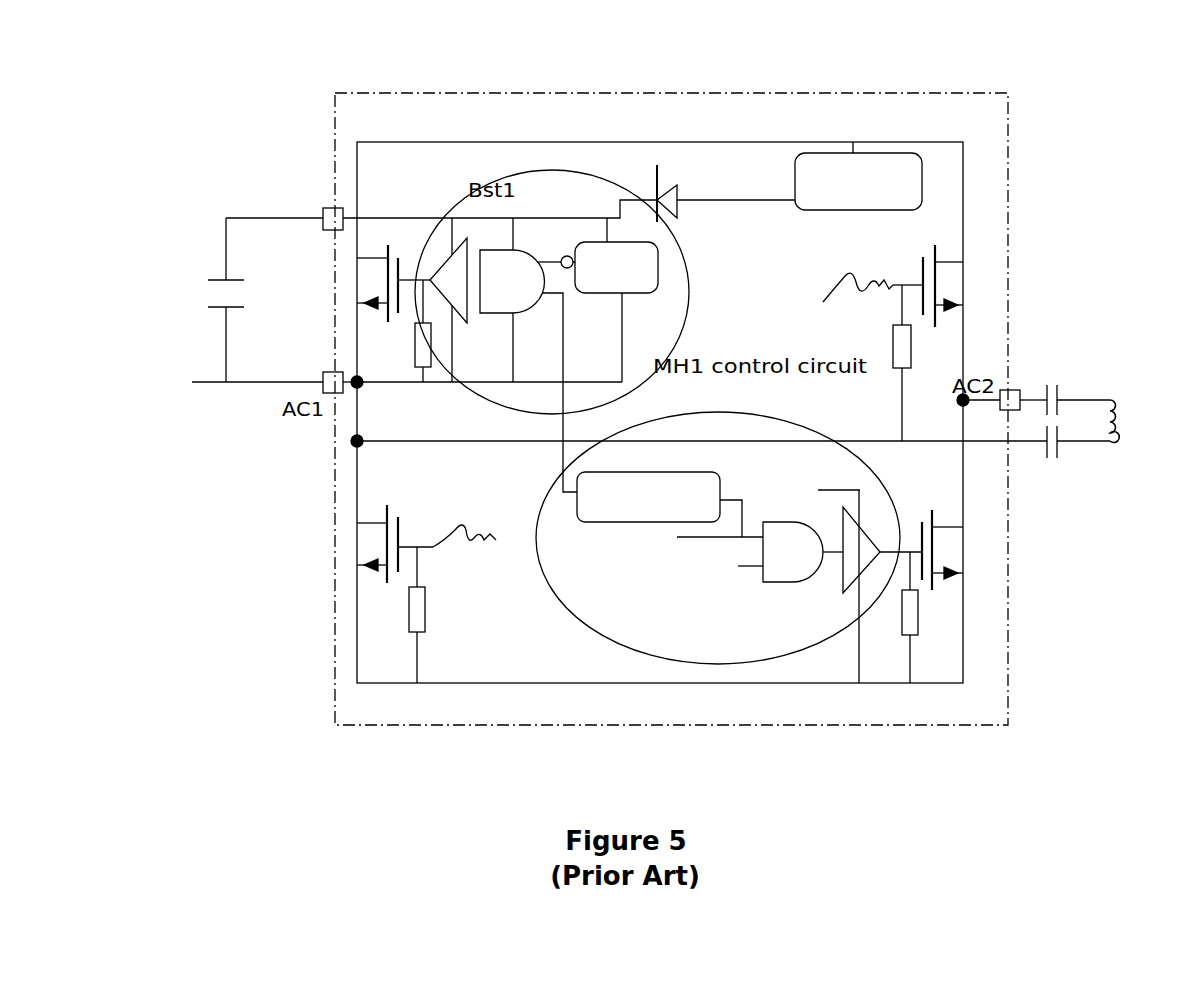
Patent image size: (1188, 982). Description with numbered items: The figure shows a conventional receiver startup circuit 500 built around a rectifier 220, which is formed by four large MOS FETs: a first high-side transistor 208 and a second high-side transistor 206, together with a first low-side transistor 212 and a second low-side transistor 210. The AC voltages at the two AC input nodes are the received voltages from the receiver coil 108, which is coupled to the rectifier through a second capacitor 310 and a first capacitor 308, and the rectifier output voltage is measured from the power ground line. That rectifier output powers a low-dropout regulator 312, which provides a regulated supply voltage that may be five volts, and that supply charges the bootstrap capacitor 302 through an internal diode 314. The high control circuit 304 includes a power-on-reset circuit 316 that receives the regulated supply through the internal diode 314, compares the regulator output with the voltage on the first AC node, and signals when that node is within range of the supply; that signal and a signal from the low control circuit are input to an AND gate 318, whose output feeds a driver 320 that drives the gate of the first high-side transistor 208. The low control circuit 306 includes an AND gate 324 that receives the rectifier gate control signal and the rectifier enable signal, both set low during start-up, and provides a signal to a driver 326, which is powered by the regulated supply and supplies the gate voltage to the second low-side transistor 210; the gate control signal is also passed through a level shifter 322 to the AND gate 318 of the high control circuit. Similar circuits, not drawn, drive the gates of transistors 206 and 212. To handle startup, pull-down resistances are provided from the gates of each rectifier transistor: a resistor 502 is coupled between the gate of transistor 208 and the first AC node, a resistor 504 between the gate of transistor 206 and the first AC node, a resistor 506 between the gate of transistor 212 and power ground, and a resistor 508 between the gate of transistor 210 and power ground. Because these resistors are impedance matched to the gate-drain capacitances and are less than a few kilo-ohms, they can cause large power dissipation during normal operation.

The conventional receiver startup circuit 500 is at (198, 98).
The rectifier 220 is at (786, 313).
The capacitor Cbst 302 is at (210, 300).
The MH1 transistor 208 is at (376, 255).
The resistor 502 is at (413, 365).
The driver 320 is at (450, 282).
The AND gate 318 is at (515, 297).
The power-on-reset circuit 316 is at (605, 277).
The internal diode D1 314 is at (650, 193).
The high control circuit 304 is at (736, 207).
The LDO regulator 312 is at (813, 202).
The MH2 transistor 206 is at (917, 275).
The resistor 504 is at (890, 348).
The capacitor C2 310 is at (1062, 395).
The capacitor C1 308 is at (1075, 466).
The receiver coil 108 is at (1132, 427).
The ML1 transistor 212 is at (402, 523).
The resistor 506 is at (418, 612).
The low control circuit 306 is at (560, 545).
The level shifter 322 is at (643, 495).
The AND gate 324 is at (797, 557).
The driver 326 is at (850, 548).
The ML2 transistor 210 is at (923, 522).
The resistor 508 is at (915, 622).